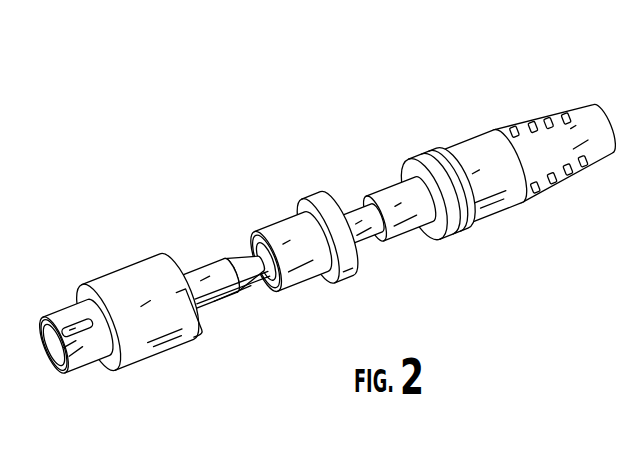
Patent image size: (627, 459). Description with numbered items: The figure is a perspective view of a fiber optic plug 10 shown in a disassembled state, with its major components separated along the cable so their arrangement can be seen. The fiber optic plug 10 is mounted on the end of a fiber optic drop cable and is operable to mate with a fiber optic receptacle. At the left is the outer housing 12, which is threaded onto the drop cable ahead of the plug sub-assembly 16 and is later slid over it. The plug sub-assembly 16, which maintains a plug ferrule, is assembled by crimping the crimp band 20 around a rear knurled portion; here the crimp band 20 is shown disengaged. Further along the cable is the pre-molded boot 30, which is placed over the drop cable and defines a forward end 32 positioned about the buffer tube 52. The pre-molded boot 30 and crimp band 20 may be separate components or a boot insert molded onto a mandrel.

The fiber optic plug 10 is at (327, 214).
The outer housing 12 is at (102, 277).
The plug sub-assembly 16 is at (242, 284).
The crimp band 20 is at (290, 216).
The pre-molded boot 30 is at (492, 130).
The forward end 32 is at (382, 190).
The buffer tube 52 is at (352, 252).